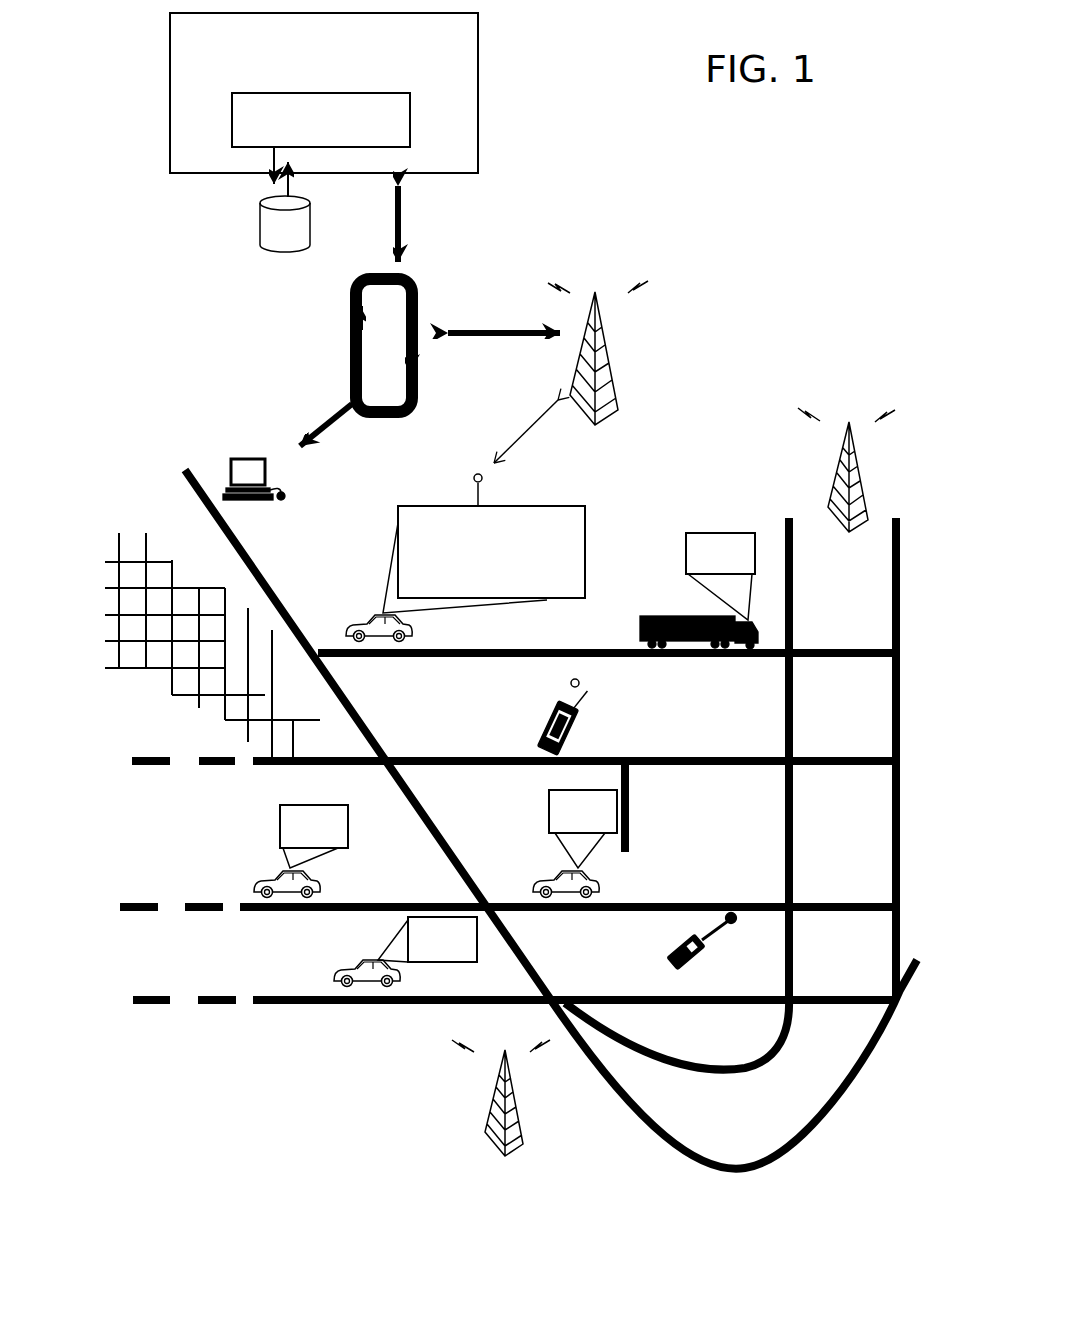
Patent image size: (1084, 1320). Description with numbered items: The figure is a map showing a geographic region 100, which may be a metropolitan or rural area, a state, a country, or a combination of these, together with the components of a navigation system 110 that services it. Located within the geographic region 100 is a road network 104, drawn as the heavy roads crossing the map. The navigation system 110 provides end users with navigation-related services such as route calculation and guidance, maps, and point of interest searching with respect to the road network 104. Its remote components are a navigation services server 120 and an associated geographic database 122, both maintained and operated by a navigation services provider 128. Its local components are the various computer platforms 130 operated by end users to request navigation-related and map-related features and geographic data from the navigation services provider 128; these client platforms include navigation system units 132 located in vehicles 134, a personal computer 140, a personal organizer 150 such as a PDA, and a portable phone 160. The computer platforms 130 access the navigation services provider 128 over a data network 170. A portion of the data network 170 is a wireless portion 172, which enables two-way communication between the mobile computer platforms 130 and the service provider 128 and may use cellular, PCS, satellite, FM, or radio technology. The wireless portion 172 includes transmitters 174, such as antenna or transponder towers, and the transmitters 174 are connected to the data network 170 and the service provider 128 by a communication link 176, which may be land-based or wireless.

The geographic region 100 is at (501, 794).
The road network 104 is at (622, 1108).
The navigation system 110 is at (520, 43).
The navigation services server 120 is at (321, 120).
The geographic database 122 is at (252, 213).
The navigation services provider 128 is at (324, 93).
The computer platforms 130 is at (272, 500).
The navigation system unit 132 is at (517, 718).
The vehicle 134 is at (368, 607).
The personal computer 140 is at (250, 454).
The personal organizer 150 is at (540, 723).
The portable phone 160 is at (660, 950).
The data network 170 is at (414, 436).
The wireless portion 172 is at (538, 450).
The transmitter 174 is at (620, 284).
The communication link 176 is at (496, 286).